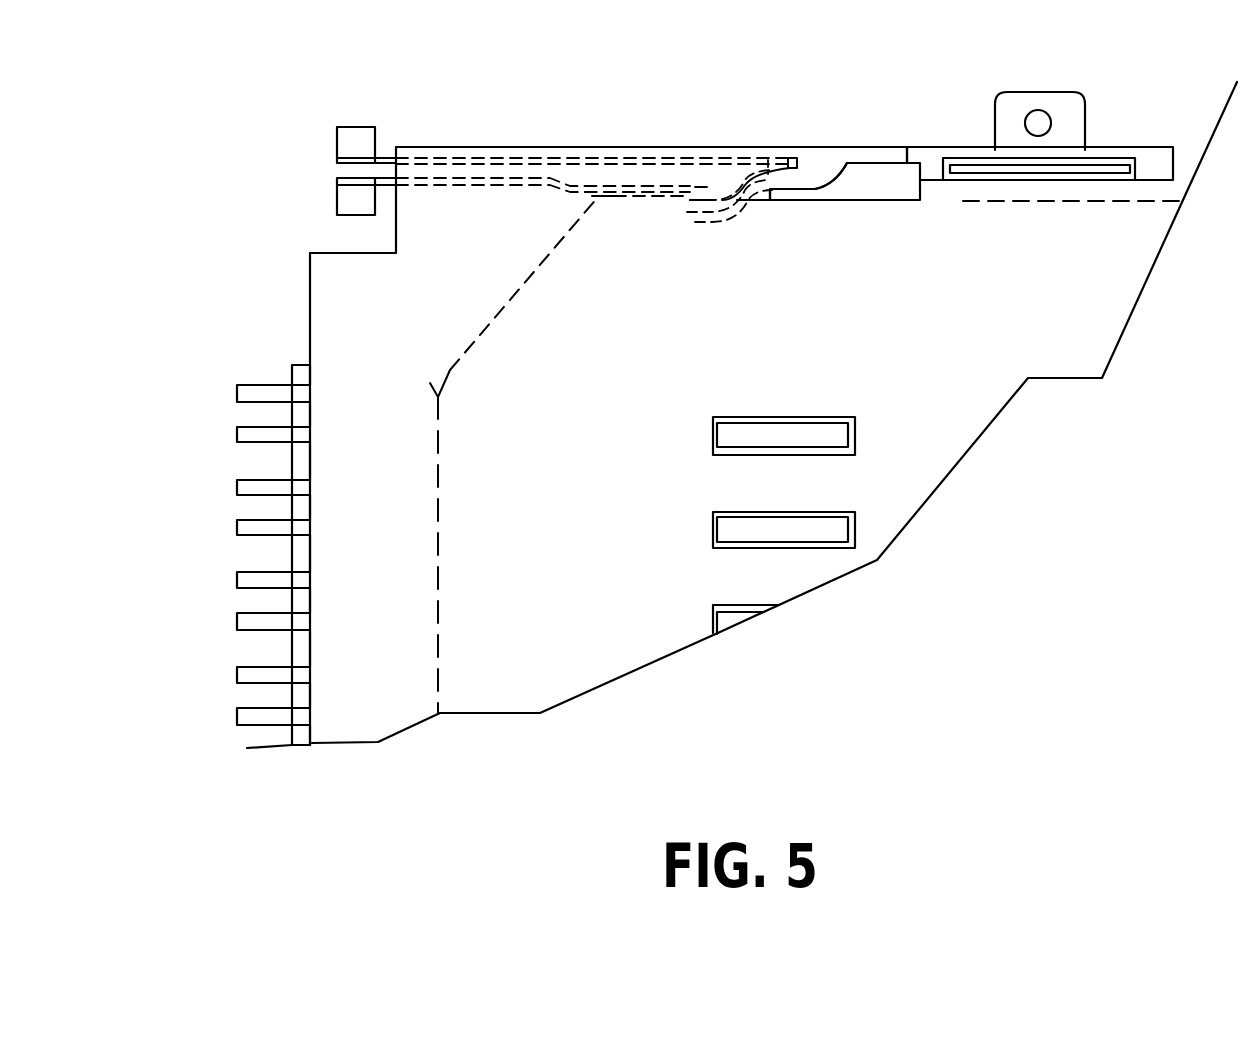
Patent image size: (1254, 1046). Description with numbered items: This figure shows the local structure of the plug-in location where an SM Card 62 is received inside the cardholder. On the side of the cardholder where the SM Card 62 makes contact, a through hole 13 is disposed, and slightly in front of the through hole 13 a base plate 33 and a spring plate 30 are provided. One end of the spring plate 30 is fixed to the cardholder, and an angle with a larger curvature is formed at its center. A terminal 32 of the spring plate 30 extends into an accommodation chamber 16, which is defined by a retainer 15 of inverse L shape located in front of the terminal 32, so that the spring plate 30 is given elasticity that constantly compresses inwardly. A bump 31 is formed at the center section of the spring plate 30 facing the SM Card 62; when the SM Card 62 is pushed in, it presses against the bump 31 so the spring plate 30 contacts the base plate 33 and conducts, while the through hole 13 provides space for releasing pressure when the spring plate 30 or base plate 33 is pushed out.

The through hole 13 is at (790, 147).
The retainer 15 is at (813, 191).
The accommodation chamber 16 is at (820, 147).
The spring plate 30 is at (630, 180).
The bump 31 is at (758, 147).
The terminal 32 is at (707, 187).
The base plate 33 is at (588, 148).
The SM card 62 is at (430, 383).